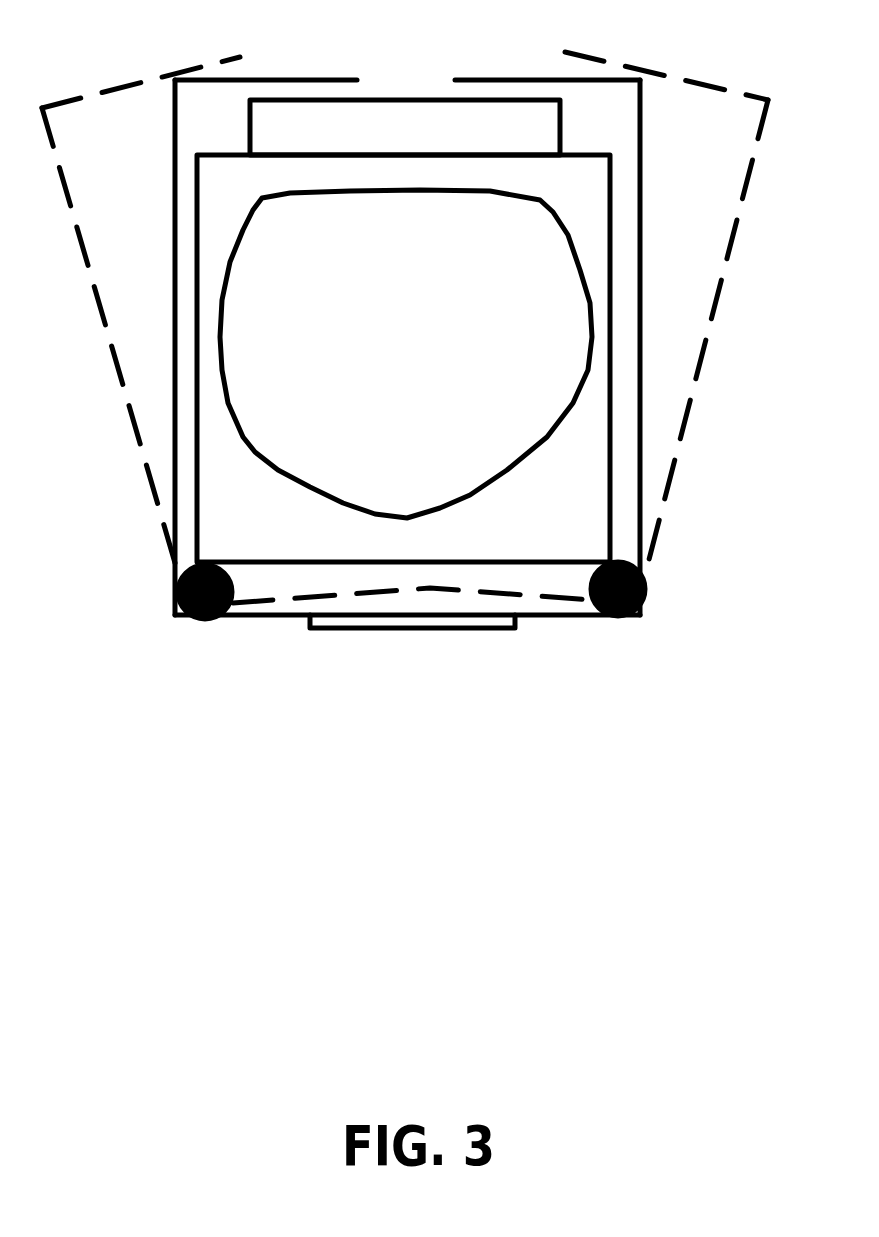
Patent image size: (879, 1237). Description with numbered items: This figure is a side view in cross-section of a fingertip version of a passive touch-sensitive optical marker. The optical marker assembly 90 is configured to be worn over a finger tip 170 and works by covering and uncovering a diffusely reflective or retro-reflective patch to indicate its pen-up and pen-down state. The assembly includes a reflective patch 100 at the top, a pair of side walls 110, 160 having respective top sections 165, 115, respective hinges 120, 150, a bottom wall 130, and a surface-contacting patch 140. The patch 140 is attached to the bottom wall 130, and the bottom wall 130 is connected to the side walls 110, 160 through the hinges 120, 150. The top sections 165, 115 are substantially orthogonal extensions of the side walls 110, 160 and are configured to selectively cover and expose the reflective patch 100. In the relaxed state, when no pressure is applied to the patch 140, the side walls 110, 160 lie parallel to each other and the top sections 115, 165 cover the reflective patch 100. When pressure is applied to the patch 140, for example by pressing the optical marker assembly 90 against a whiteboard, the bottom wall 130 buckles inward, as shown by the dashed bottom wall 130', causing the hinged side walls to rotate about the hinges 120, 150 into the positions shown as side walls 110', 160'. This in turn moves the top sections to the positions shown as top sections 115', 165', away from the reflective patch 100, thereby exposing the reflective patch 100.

The optical marker assembly 90 is at (423, 414).
The reflective patch 100 is at (390, 100).
The side wall 110 is at (132, 347).
The rotated side wall 110' is at (101, 344).
The top section 115 is at (547, 44).
The moved top section 115' is at (666, 54).
The hinge 120 is at (184, 608).
The bottom wall 130 is at (407, 660).
The buckled bottom wall 130' is at (424, 625).
The surface-contacting patch 140 is at (426, 630).
The hinge 150 is at (642, 606).
The side wall 160 is at (682, 347).
The rotated side wall 160' is at (718, 337).
The top section 165 is at (266, 44).
The moved top section 165' is at (141, 58).
The finger tip 170 is at (376, 192).